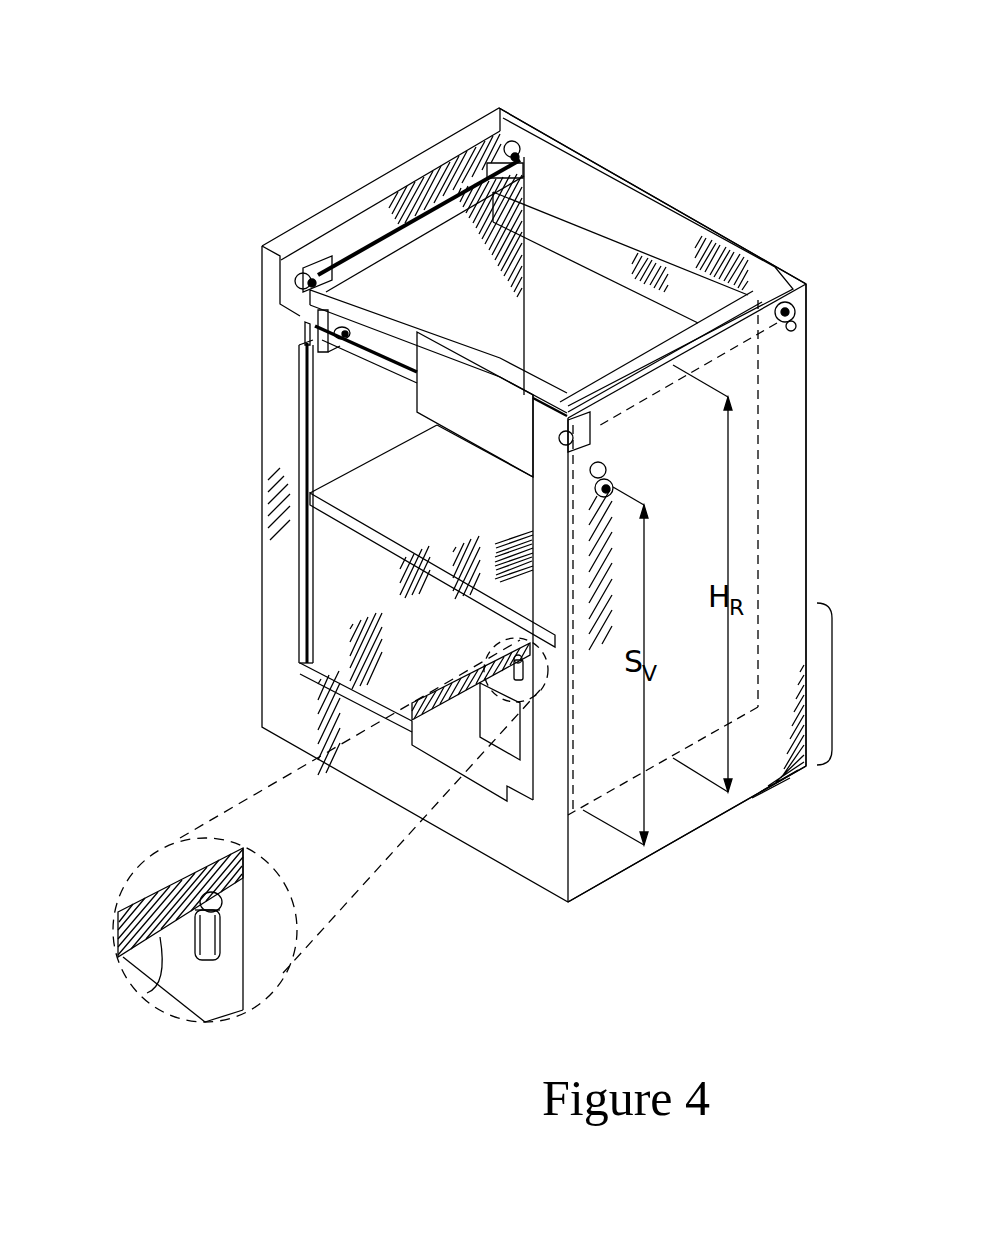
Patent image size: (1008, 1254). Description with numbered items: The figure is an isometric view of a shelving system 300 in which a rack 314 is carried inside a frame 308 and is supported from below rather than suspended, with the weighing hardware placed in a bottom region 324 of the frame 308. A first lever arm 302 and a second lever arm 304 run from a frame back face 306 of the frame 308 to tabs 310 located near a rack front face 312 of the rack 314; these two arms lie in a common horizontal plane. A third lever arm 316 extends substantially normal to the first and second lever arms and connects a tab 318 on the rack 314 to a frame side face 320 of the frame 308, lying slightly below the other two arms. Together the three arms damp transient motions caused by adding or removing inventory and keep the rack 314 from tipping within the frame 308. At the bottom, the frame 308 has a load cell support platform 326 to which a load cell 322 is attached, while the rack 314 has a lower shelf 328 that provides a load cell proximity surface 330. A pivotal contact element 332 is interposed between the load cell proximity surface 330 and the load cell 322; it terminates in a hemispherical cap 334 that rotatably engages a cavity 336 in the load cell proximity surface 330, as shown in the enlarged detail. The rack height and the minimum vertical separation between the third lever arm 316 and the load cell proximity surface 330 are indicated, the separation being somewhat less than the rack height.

The shelving system 300 is at (725, 98).
The first lever arm 302 is at (352, 250).
The second lever arm 304 is at (740, 347).
The frame back face 306 is at (655, 197).
The frame 308 is at (723, 232).
The tabs 310 is at (302, 263).
The rack front face 312 is at (310, 447).
The rack 314 is at (545, 173).
The third lever arm 316 is at (377, 348).
The tab 318 is at (328, 338).
The frame side face 320 is at (678, 803).
The load cell 322 is at (513, 745).
The bottom region 324 is at (832, 685).
The load cell support platform 326 is at (503, 788).
The lower shelf 328 is at (310, 664).
The load cell proximity surface 330 is at (430, 717).
The pivotal contact element 332 is at (528, 677).
The hemispherical cap 334 is at (210, 910).
The cavity 336 is at (212, 897).